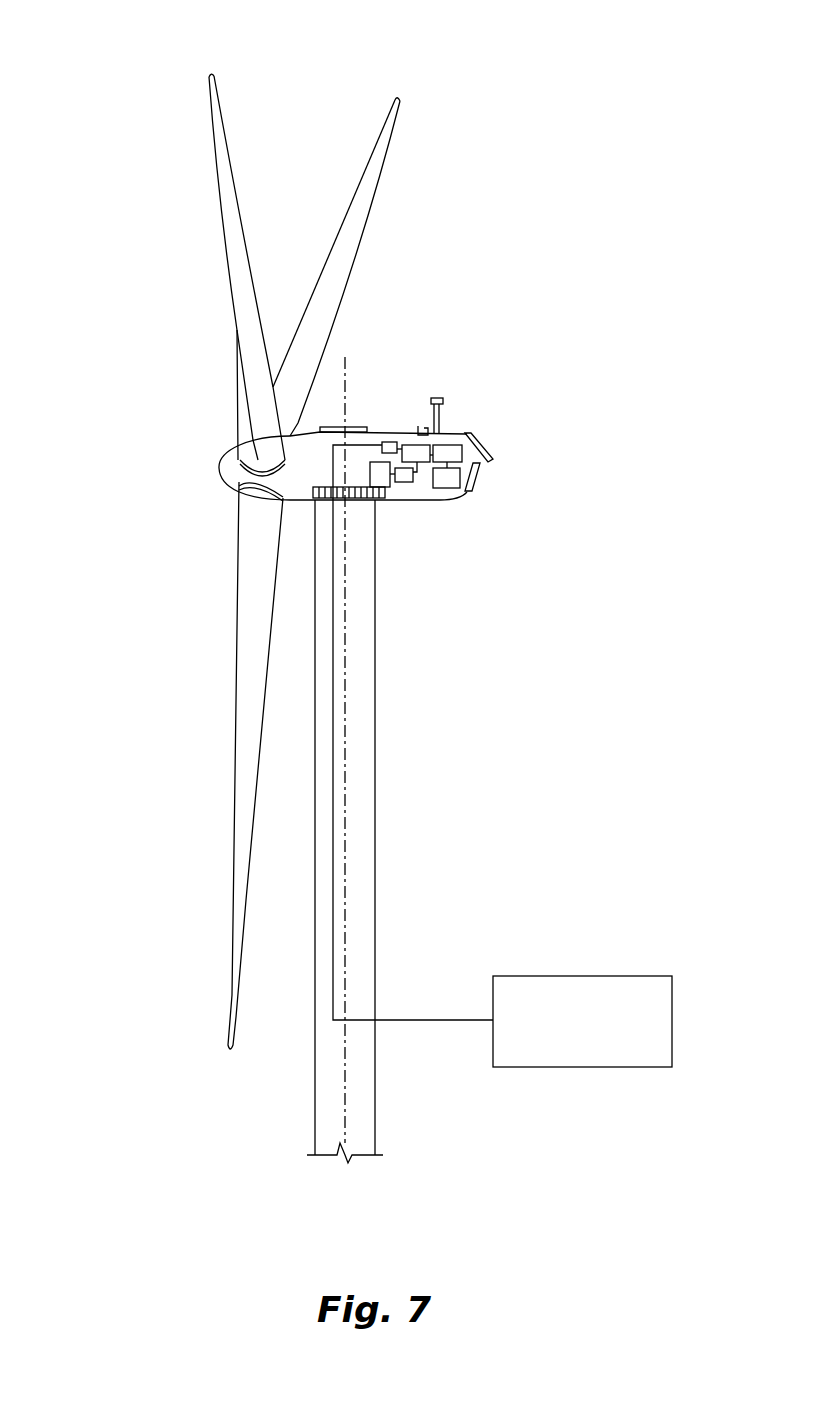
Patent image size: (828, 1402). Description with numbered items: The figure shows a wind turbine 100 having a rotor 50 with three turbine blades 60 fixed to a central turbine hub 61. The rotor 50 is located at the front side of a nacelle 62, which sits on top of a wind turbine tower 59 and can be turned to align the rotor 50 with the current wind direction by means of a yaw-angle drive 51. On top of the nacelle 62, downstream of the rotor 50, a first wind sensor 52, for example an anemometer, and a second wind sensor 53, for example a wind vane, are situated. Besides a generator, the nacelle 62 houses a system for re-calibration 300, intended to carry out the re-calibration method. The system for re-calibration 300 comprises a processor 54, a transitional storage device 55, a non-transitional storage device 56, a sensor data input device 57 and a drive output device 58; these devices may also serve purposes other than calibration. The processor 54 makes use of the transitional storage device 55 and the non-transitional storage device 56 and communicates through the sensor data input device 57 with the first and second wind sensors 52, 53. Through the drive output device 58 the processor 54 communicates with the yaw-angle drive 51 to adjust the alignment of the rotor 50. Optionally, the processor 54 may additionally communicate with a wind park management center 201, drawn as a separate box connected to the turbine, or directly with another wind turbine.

The wind turbine 100 is at (447, 57).
The system for re-calibration 300 is at (533, 308).
The rotor 50 is at (172, 388).
The turbine blades 60 is at (207, 128).
The central turbine hub 61 is at (217, 467).
The nacelle 62 is at (492, 445).
The wind turbine tower 59 is at (375, 725).
The wind park management center 201 is at (583, 987).
The yaw-angle drive 51 is at (388, 484).
The first wind sensor 52 is at (440, 396).
The second wind sensor 53 is at (420, 424).
The processor 54 is at (422, 457).
The transitional storage device 55 is at (457, 453).
The non-transitional storage device 56 is at (457, 480).
The sensor data input device 57 is at (379, 441).
The drive output device 58 is at (408, 477).